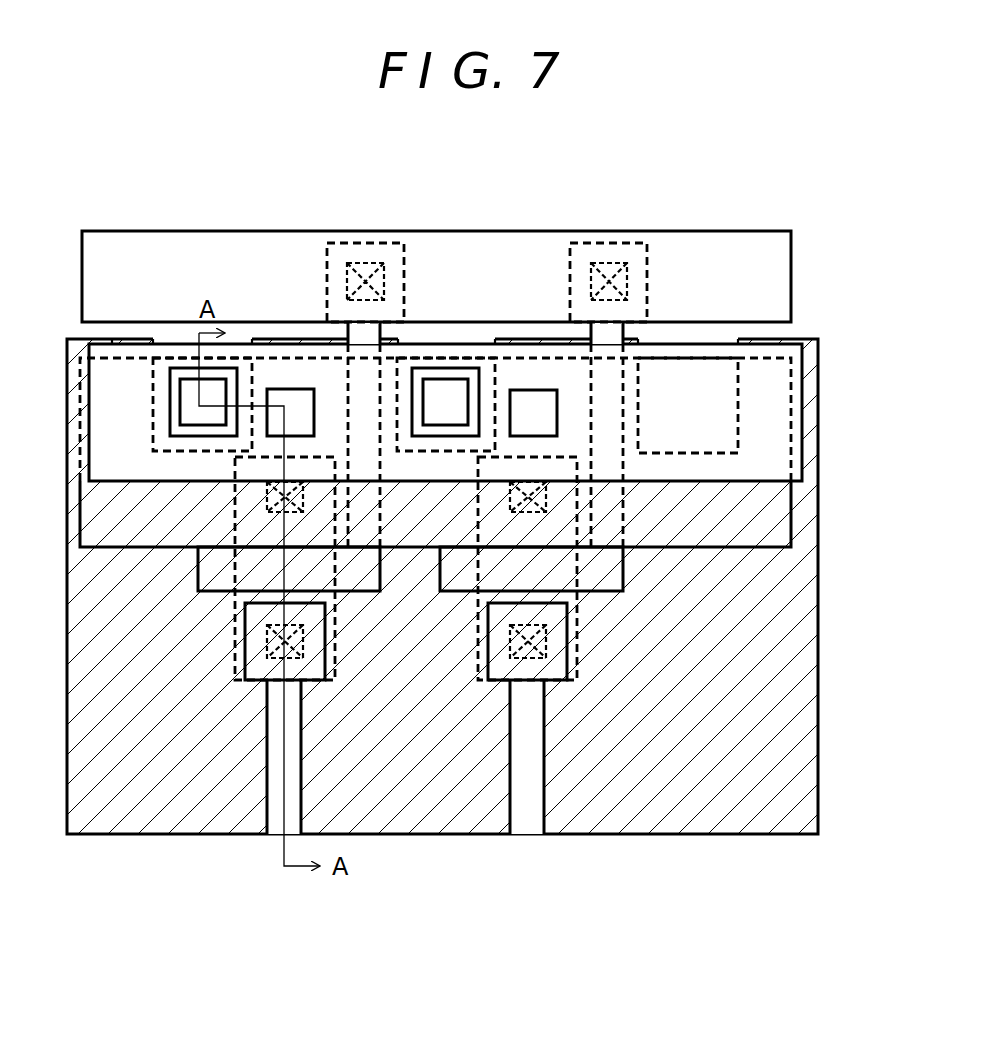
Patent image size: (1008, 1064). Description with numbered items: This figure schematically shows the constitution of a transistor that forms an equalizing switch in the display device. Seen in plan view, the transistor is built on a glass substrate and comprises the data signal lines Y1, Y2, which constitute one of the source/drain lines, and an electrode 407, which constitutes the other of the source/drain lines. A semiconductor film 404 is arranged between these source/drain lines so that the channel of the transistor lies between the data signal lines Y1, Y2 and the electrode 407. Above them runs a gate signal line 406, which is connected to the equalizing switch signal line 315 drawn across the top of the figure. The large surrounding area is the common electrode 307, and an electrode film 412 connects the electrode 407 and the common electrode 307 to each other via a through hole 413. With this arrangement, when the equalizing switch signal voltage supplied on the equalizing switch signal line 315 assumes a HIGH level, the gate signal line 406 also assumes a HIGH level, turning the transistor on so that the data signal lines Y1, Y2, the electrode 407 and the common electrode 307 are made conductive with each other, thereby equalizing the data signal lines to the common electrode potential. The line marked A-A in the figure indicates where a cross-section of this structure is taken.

The common electrode 307 is at (755, 742).
The equalizing switch signal line 315 is at (725, 240).
The semiconductor film 404 is at (573, 655).
The gate signal line 406 is at (613, 580).
The electrode 407 is at (772, 513).
The electrode film 412 is at (772, 395).
The through hole 413 is at (447, 403).
The data signal line Y1 is at (273, 810).
The data signal line Y2 is at (525, 815).